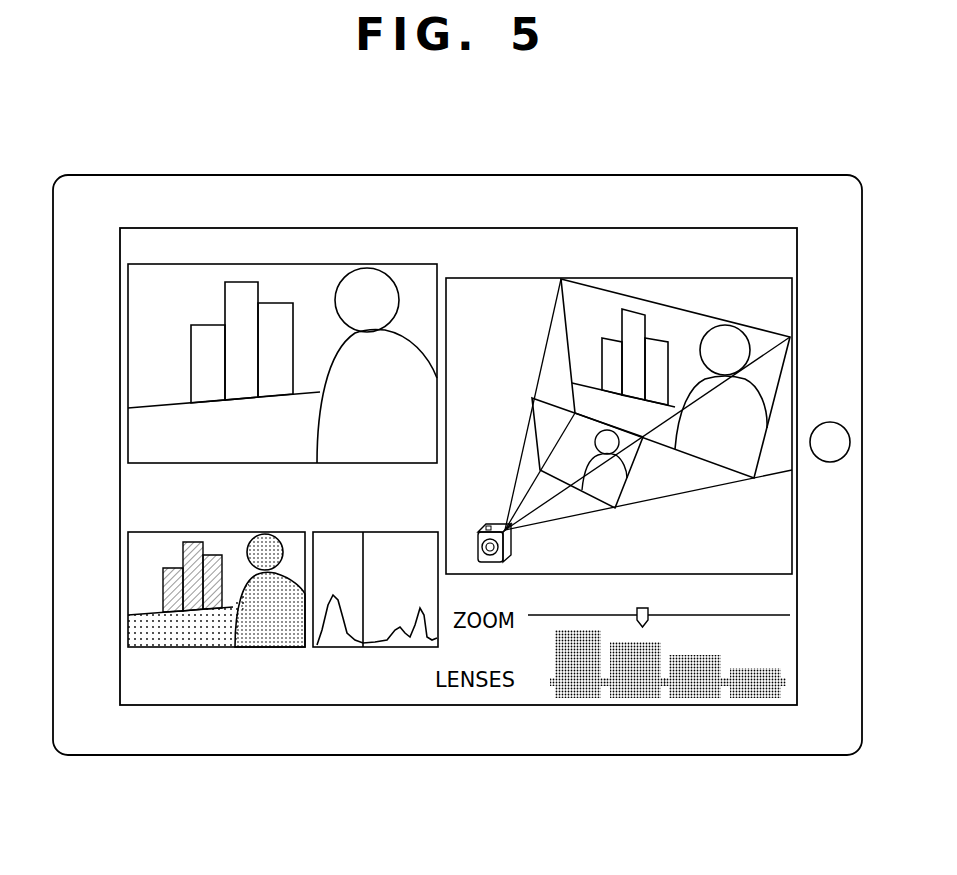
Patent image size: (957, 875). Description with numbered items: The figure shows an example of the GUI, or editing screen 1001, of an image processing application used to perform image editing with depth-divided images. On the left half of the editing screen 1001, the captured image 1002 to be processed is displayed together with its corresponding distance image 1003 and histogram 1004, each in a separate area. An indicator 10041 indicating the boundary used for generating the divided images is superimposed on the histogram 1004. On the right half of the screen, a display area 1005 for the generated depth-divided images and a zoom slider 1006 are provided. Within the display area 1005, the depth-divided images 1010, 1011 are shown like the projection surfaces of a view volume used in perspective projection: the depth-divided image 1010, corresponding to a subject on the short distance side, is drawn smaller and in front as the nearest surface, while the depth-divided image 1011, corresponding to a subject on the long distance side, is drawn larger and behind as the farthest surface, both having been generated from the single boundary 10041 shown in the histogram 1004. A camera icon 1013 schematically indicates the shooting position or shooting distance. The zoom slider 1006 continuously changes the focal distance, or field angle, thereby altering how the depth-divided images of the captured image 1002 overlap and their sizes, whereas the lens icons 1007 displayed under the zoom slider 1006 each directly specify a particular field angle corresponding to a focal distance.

The GUI (editing screen) 1001 is at (527, 248).
The captured image 1002 is at (175, 263).
The distance image 1003 is at (205, 530).
The histogram 1004 is at (325, 530).
The indicator 10041 is at (367, 580).
The display area 1005 is at (710, 277).
The zoom slider 1006 is at (703, 602).
The lens icons 1007 is at (765, 655).
The depth-divided image 1010 is at (532, 425).
The depth-divided image 1011 is at (560, 330).
The camera icon 1013 is at (480, 527).